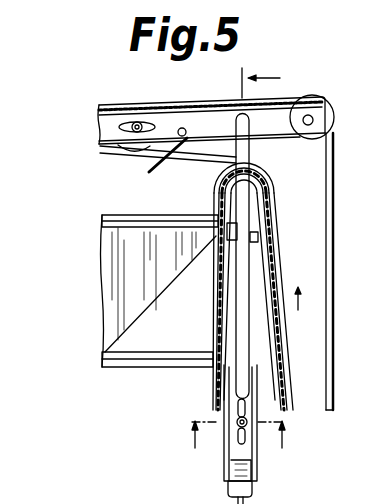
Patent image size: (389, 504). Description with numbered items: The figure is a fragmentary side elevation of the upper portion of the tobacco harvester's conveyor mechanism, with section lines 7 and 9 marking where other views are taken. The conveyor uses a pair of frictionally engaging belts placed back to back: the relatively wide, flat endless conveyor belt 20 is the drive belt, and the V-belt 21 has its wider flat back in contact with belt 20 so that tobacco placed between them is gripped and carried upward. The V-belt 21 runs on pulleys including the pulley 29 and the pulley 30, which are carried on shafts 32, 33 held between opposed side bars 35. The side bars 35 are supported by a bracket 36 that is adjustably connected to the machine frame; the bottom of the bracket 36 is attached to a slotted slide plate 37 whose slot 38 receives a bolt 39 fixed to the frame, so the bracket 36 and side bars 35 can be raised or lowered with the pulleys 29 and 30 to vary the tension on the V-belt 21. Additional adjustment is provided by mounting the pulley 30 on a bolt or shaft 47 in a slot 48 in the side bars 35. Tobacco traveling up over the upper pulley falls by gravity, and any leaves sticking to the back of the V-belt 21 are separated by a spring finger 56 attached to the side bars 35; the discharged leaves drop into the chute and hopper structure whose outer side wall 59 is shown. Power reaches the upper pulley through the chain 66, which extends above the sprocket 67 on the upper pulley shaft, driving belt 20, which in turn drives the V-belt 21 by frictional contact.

The section line 7- 7 is at (261, 76).
The section line 9- 9 is at (238, 435).
The conveyor belt 20 is at (278, 258).
The V-belt 21 is at (280, 233).
The pulley 29 is at (333, 104).
The pulley 30 is at (126, 149).
The shaft 32 is at (313, 119).
The shaft 33 is at (150, 128).
The side bars 35 is at (217, 108).
The bracket 36 is at (248, 150).
The slotted slide plate 37 is at (237, 452).
The slot 38 is at (238, 443).
The bolt 39 is at (247, 426).
The bolt or shaft 47 is at (136, 123).
The slot 48 is at (103, 125).
The spring finger 56 is at (149, 173).
The outer side wall 59 is at (133, 232).
The chain 66 is at (215, 314).
The sprocket 67 is at (230, 188).